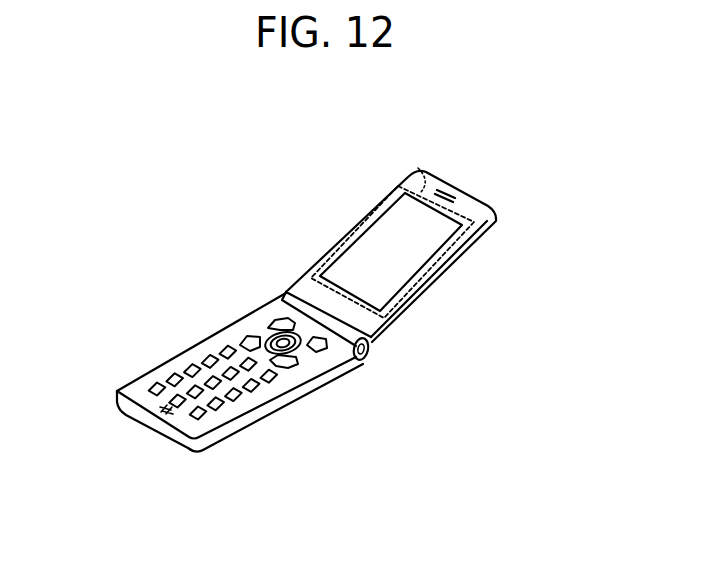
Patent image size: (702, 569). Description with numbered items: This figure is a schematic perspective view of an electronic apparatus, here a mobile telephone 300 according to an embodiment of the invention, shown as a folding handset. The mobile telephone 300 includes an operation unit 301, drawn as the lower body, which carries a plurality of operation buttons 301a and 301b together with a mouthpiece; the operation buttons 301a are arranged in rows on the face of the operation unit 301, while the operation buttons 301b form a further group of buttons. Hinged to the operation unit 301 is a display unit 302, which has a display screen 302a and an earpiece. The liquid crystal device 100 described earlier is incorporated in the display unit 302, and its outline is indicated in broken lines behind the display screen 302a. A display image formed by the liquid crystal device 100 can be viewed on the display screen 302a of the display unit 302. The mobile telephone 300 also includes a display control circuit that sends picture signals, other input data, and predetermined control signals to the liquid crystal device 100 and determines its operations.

The mobile telephone 300 is at (252, 128).
The liquid crystal device 100 is at (418, 168).
The operation unit 301 is at (177, 361).
The operation buttons 301a is at (252, 384).
The operation buttons 301b is at (300, 352).
The display unit 302 is at (443, 275).
The display screen 302a is at (372, 252).